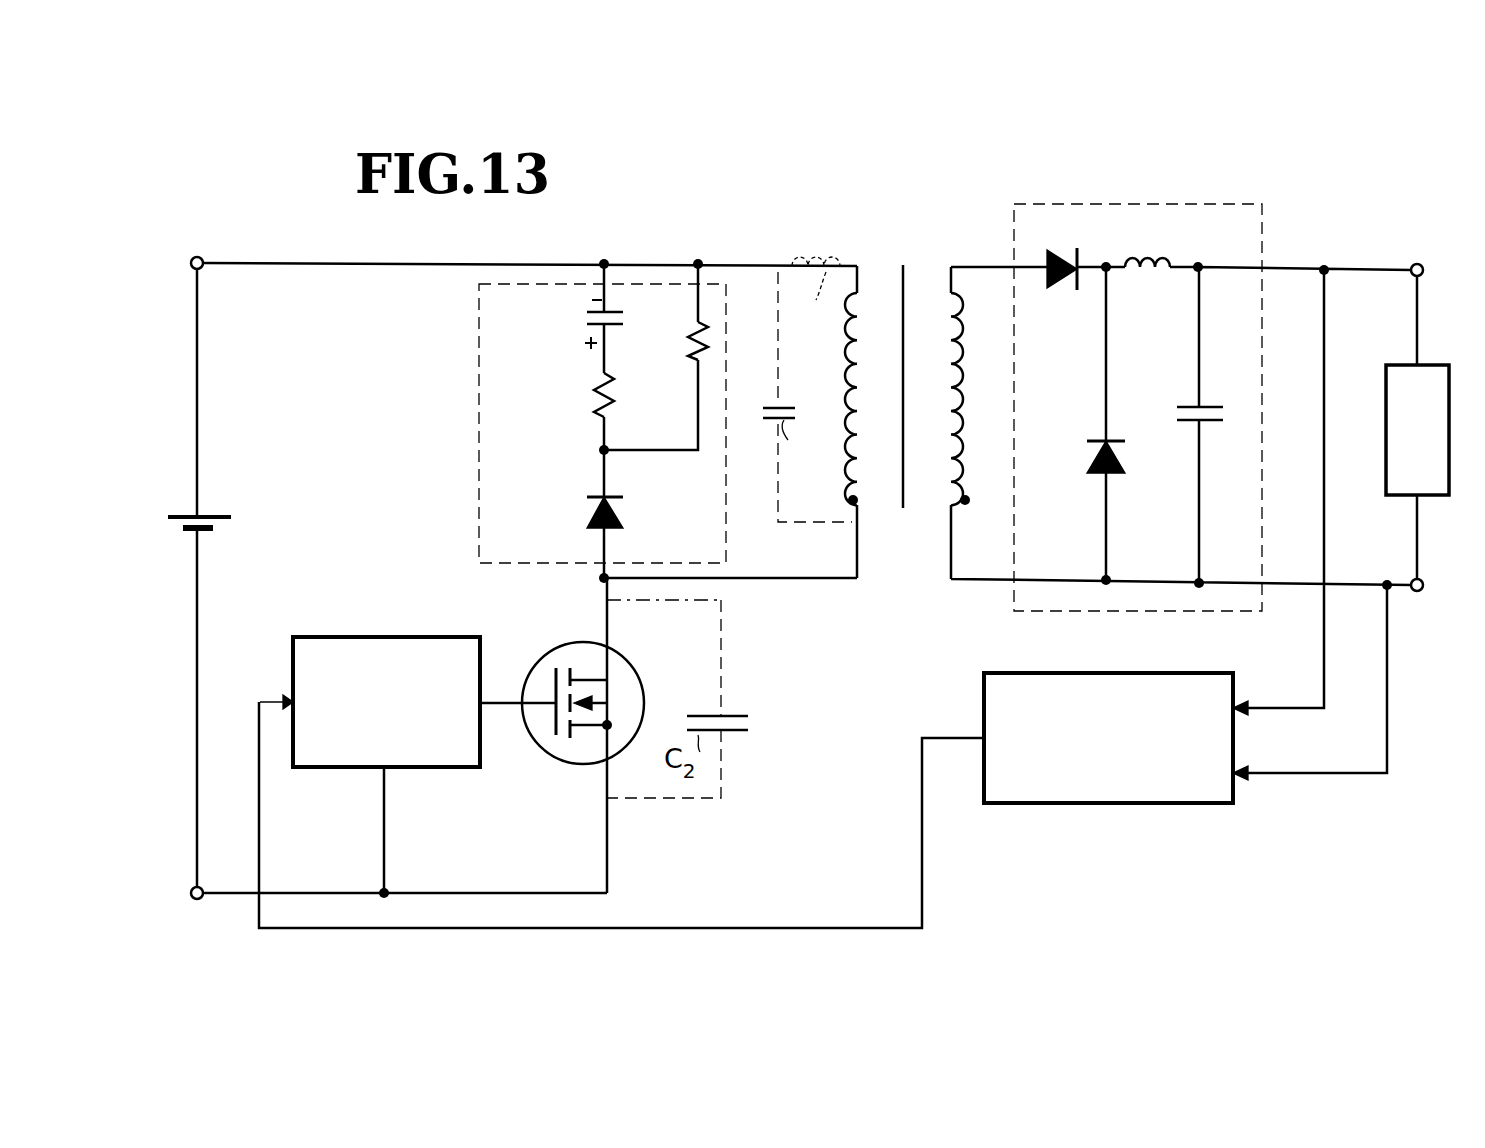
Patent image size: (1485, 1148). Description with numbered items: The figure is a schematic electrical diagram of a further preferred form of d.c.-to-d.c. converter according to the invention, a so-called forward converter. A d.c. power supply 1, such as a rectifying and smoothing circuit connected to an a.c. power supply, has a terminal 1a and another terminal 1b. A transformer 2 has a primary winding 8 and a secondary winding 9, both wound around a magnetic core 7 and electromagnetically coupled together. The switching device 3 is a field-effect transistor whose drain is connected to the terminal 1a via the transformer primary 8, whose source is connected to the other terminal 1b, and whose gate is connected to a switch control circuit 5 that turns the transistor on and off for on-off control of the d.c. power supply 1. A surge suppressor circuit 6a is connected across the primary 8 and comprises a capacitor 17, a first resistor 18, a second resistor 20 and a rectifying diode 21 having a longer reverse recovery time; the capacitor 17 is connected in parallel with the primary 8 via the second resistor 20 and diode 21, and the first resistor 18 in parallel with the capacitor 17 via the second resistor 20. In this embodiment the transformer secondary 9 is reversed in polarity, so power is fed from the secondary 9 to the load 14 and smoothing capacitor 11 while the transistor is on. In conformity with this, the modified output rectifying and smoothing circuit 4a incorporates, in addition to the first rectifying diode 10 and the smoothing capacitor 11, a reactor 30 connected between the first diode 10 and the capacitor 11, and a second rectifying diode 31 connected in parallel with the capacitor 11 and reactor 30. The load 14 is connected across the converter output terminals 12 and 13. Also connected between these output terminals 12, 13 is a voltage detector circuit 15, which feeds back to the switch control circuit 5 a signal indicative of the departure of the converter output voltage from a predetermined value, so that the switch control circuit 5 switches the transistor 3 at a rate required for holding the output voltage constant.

The terminal of the d.c. power supply 1a is at (197, 257).
The terminal of the d.c. power supply 1b is at (197, 899).
The d.c. power supply 1 is at (207, 514).
The transformer 2 is at (882, 389).
The switching device 3 is at (646, 700).
The output rectifying and smoothing circuit 4a is at (1270, 254).
The switch control circuit 5 is at (375, 636).
The surge suppressor circuit 6a is at (479, 332).
The magnetic core 7 is at (910, 512).
The primary winding 8 is at (846, 374).
The secondary winding 9 is at (964, 330).
The first rectifying diode 10 is at (1064, 290).
The smoothing capacitor 11 is at (1180, 398).
The converter output terminal 12 is at (1416, 262).
The converter output terminal 13 is at (1417, 591).
The load 14 is at (1393, 364).
The voltage detector circuit 15 is at (984, 708).
The capacitor 17 is at (590, 332).
The first resistor 18 is at (690, 333).
The second resistor 20 is at (594, 398).
The rectifying diode 21 is at (592, 512).
The reactor 30 is at (1158, 256).
The second rectifying diode 31 is at (1092, 470).